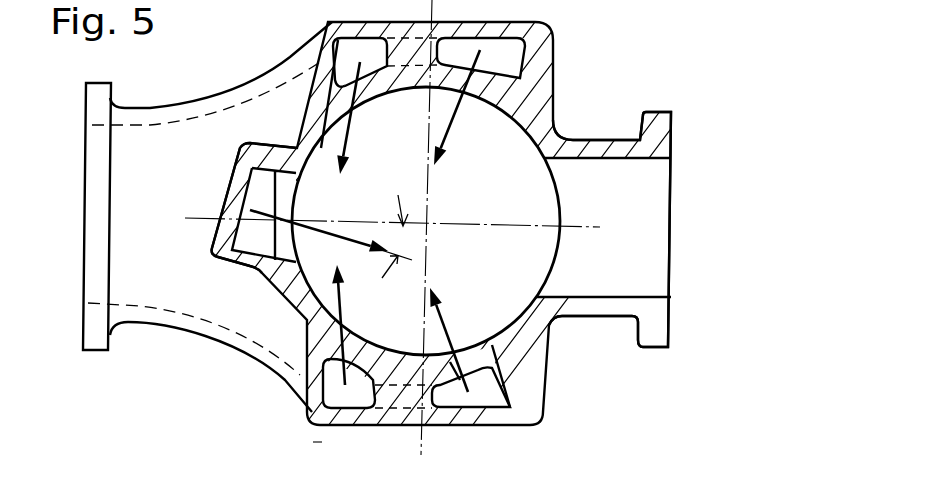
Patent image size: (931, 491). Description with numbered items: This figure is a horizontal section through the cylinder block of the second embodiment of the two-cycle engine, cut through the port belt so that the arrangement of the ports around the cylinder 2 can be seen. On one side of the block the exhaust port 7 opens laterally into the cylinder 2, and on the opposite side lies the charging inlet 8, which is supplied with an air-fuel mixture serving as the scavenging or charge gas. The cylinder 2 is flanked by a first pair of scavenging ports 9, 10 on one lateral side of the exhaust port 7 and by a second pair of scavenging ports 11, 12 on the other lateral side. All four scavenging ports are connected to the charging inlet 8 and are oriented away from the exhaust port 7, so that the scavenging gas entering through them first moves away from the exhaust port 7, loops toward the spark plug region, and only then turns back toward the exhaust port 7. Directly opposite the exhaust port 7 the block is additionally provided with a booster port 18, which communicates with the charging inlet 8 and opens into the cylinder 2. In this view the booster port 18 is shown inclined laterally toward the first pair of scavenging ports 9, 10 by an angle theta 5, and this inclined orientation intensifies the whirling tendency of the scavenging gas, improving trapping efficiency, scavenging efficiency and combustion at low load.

The cylinder 2 is at (543, 280).
The angle theta 5 is at (403, 226).
The exhaust port 7 is at (610, 187).
The charging inlet 8 is at (103, 273).
The scavenging port 9 is at (512, 407).
The scavenging port 10 is at (327, 335).
The scavenging port 11 is at (503, 82).
The scavenging port 12 is at (338, 110).
The booster port 18 is at (233, 260).